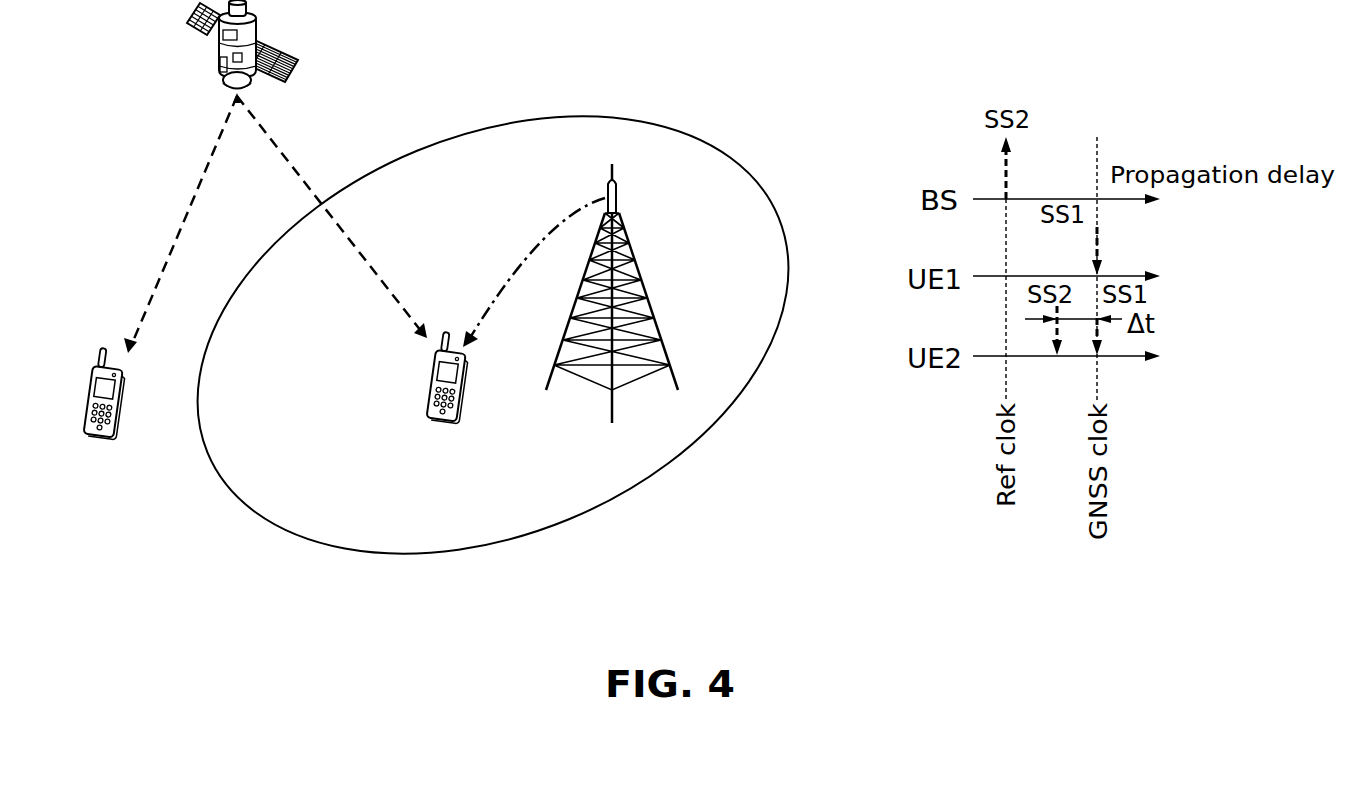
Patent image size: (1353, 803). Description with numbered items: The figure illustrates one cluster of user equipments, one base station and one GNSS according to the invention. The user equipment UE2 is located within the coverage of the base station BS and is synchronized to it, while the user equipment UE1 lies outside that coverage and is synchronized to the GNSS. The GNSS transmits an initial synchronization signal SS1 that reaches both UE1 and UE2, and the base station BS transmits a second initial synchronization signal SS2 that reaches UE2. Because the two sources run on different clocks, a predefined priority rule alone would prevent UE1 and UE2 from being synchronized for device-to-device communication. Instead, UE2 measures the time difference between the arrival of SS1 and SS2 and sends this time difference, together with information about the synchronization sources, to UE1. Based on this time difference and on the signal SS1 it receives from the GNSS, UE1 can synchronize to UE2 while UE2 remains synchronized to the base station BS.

The element GNSS is at (222, 72).
The synchronization signal SS1 is at (275, 223).
The synchronization signal SS2 is at (534, 272).
The element UE1 is at (105, 427).
The element UE2 is at (434, 378).
The element BS is at (626, 232).